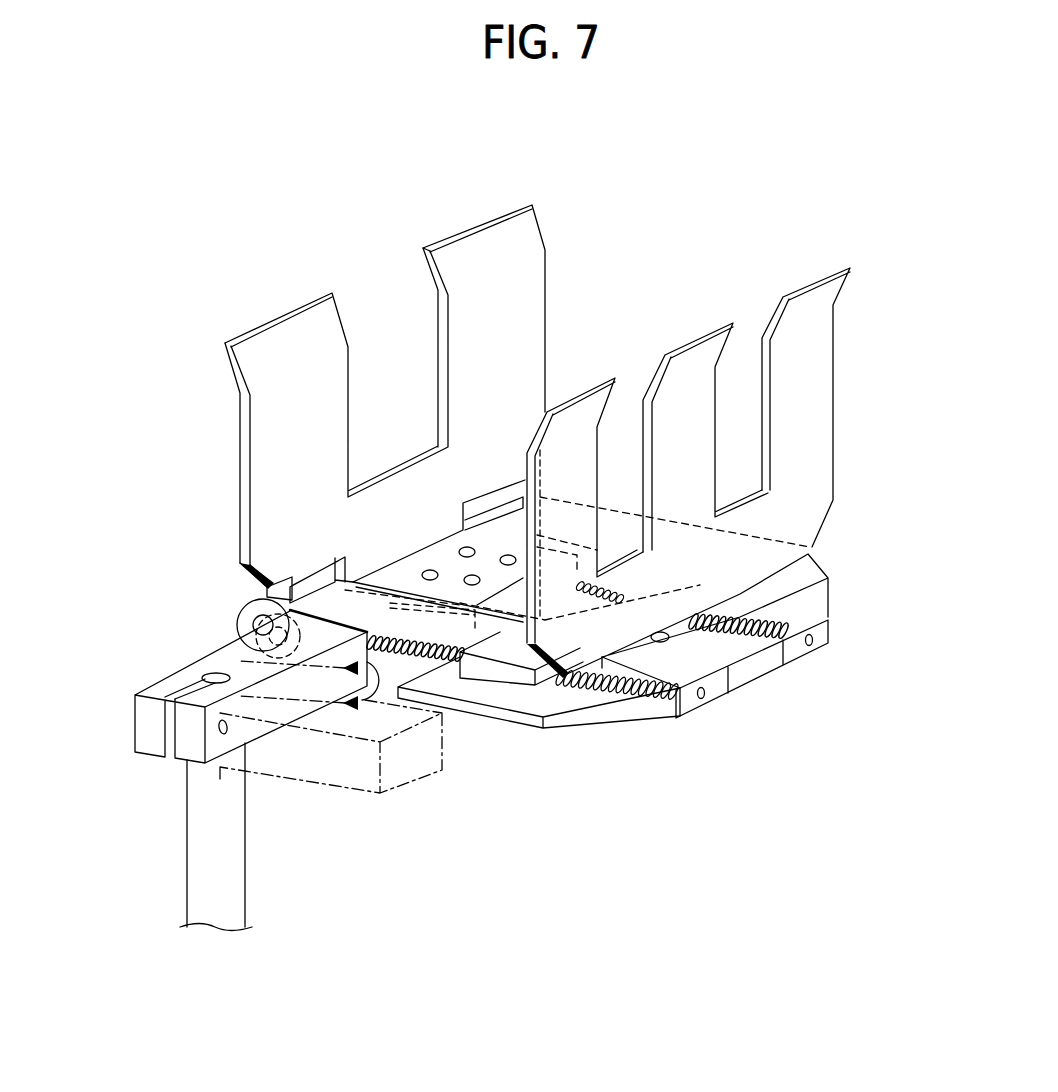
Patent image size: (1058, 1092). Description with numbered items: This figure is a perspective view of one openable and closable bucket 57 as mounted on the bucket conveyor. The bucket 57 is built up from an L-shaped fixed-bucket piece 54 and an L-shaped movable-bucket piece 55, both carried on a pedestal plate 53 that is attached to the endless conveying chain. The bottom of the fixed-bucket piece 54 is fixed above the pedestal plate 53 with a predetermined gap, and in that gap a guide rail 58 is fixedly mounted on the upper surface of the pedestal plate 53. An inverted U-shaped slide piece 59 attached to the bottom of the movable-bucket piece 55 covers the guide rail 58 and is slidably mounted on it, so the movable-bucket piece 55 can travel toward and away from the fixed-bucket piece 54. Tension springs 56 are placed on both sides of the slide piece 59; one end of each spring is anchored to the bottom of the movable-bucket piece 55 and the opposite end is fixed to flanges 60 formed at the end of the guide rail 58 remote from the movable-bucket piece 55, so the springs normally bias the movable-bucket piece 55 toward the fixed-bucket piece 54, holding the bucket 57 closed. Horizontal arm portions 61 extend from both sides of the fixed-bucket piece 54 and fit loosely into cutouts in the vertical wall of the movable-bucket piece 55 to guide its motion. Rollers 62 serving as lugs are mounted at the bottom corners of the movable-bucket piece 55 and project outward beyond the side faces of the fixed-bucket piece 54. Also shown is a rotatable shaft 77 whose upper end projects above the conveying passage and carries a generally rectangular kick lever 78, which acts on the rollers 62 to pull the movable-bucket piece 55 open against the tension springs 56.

The pedestal plate 53 is at (562, 712).
The fixed-bucket piece 54 is at (810, 472).
The movable-bucket piece 55 is at (510, 262).
The tension springs 56 is at (740, 600).
The bucket 57 is at (860, 237).
The guide rail 58 is at (737, 650).
The slide piece 59 is at (485, 628).
The flanges 60 is at (830, 635).
The horizontal arm portions 61 is at (625, 525).
The rollers 62 is at (240, 613).
The rotatable shaft 77 is at (200, 873).
The kick lever 78 is at (183, 677).